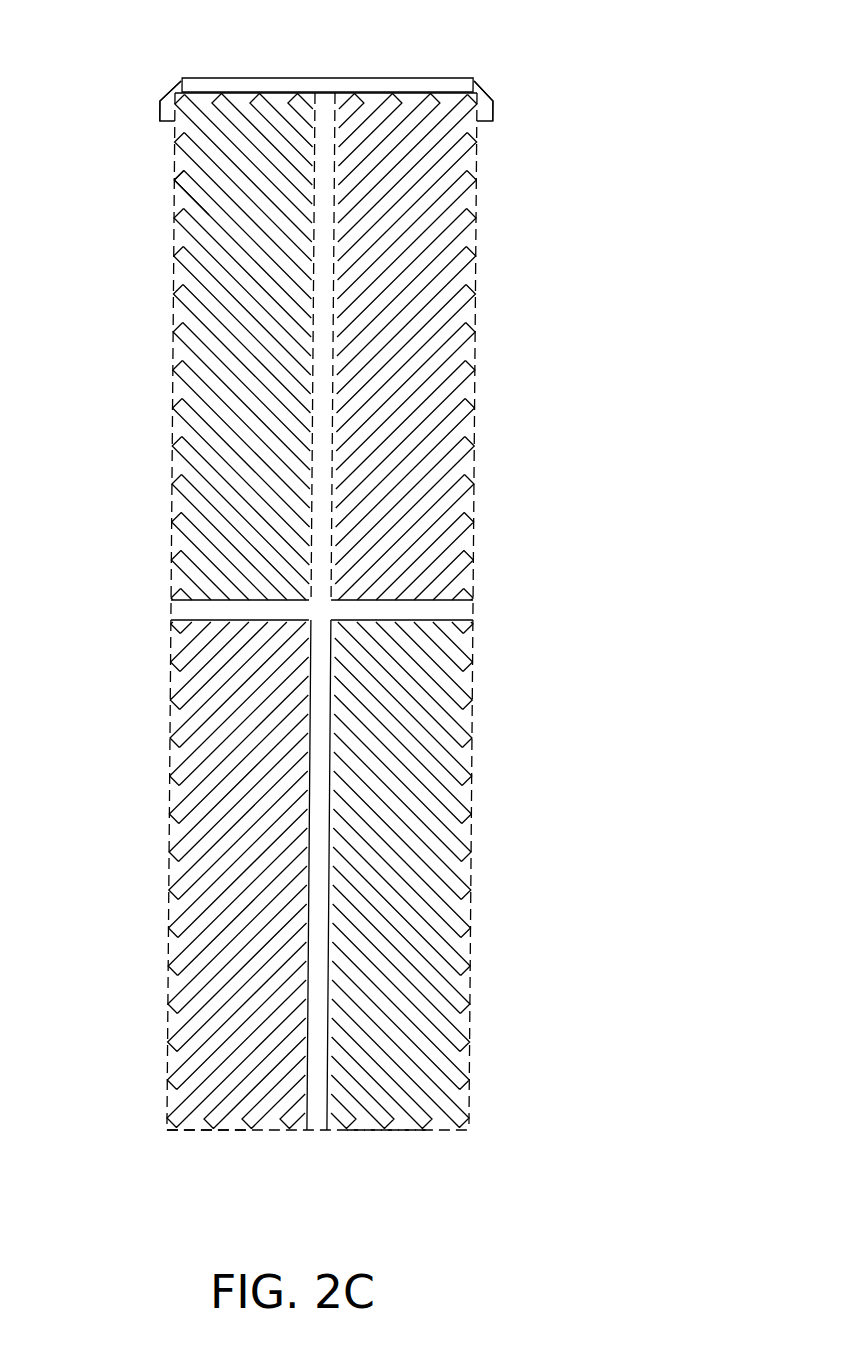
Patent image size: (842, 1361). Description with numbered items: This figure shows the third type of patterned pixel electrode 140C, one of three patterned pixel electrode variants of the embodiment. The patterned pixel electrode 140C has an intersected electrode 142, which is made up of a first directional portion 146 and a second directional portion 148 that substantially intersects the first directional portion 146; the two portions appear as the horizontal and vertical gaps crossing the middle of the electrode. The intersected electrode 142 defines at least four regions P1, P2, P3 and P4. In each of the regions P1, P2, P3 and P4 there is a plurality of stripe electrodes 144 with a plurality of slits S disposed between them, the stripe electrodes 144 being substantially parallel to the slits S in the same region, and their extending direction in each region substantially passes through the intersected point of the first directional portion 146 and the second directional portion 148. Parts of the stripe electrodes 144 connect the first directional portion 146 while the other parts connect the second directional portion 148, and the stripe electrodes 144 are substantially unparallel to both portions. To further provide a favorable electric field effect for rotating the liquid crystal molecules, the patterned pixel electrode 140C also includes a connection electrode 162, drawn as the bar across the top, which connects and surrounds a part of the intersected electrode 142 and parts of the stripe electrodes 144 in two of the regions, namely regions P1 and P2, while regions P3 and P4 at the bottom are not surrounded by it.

The patterned pixel electrode 140C is at (471, 1227).
The connection electrode 162 is at (388, 86).
The stripe electrodes 144 is at (182, 252).
The intersected electrode 142 is at (266, 611).
The first directional portion 146 is at (207, 611).
The second directional portion 148 is at (318, 740).
The slits S is at (198, 213).
The region P1 is at (179, 77).
The region P2 is at (477, 71).
The region P3 is at (233, 1131).
The region P4 is at (398, 1131).